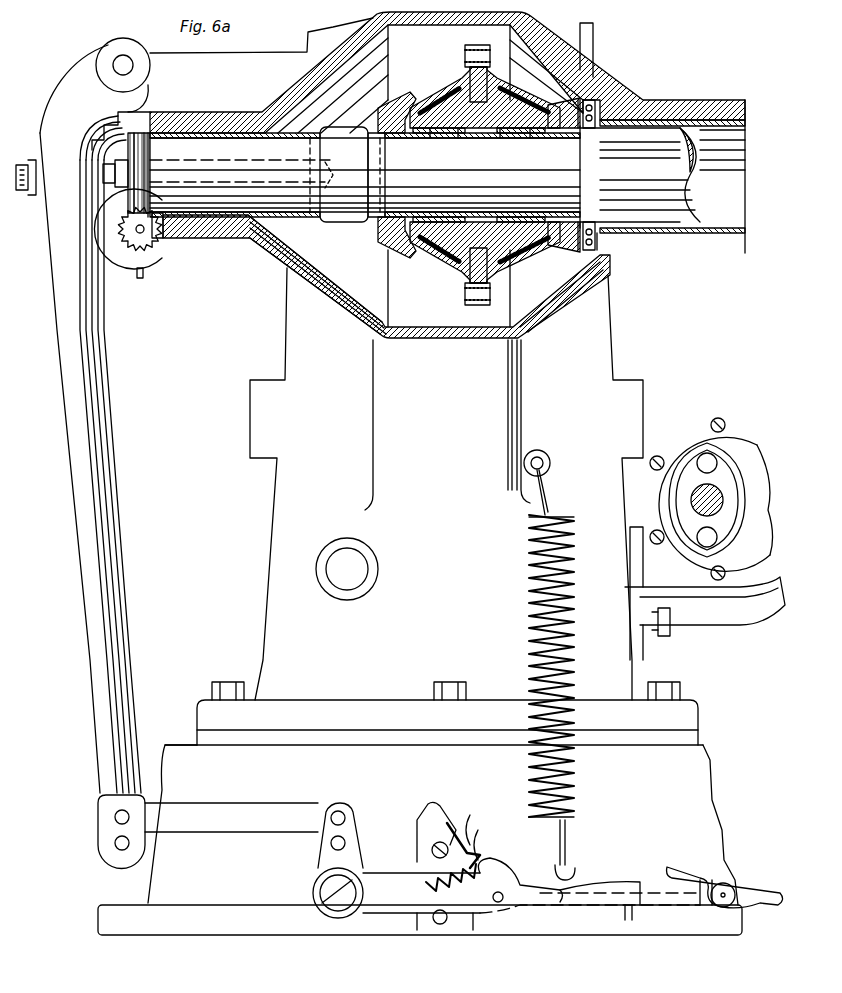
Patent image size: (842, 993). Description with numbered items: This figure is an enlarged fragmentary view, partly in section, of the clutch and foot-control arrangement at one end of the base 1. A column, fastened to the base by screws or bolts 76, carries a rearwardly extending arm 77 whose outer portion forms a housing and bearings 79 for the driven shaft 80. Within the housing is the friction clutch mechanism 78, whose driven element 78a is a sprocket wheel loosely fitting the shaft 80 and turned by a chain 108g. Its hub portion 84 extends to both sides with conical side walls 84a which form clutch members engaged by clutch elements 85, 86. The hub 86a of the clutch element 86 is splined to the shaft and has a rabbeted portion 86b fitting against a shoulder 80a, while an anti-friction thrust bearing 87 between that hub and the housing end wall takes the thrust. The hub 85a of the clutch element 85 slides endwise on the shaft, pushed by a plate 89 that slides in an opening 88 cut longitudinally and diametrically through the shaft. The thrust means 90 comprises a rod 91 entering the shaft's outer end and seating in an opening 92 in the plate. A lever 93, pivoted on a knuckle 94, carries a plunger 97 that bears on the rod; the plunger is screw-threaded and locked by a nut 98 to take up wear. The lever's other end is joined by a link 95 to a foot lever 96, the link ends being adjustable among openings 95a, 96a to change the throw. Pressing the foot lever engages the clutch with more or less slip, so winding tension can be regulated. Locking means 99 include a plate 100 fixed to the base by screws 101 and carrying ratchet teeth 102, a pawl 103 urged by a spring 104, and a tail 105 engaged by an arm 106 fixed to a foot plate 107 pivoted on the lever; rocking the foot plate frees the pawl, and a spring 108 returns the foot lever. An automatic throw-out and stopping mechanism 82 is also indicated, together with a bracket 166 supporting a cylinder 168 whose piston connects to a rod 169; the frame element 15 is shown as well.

The base 1 is at (705, 760).
The frame 15 is at (278, 492).
The screws or bolts 76 is at (231, 682).
The rearwardly extending arm 77 is at (385, 409).
The friction clutch mechanism 78 is at (448, 168).
The driven element 78a is at (468, 68).
The bearings 79 is at (222, 225).
The driven shaft 80 is at (364, 175).
The shoulder 80a is at (585, 165).
The automatic throw-out and stopping mechanism 82 is at (155, 268).
The hub portion 84 is at (524, 130).
The conical side walls 84a is at (438, 118).
The clutch element 85 is at (400, 100).
The hub 85a is at (373, 235).
The clutch element 86 is at (564, 161).
The hub 86a is at (583, 105).
The rabbeted portion 86b is at (585, 135).
The anti-friction thrust bearing 87 is at (580, 248).
The opening 88 is at (312, 220).
The plate 89 is at (350, 222).
The thrust means 90 is at (240, 155).
The rod 91 is at (222, 172).
The opening 92 is at (328, 166).
The lever 93 is at (95, 325).
The knuckle 94 is at (148, 33).
The link 95 is at (248, 815).
The openings 95a is at (112, 855).
The foot lever 96 is at (362, 872).
The openings 96a is at (332, 845).
The plunger 97 is at (122, 160).
The nut 98 is at (27, 158).
The locking means 99 is at (486, 841).
The plate 100 is at (424, 815).
The screws 101 is at (440, 848).
The ratchet teeth 102 is at (462, 820).
The pawl 103 is at (512, 875).
The spring 104 is at (440, 872).
The tail 105 is at (588, 913).
The arm 106 is at (622, 890).
The foot plate 107 is at (677, 872).
The spring 108 is at (578, 780).
The chain 108g is at (490, 58).
The bracket 166 is at (755, 615).
The cylinder 168 is at (755, 432).
The rod 169 is at (695, 495).